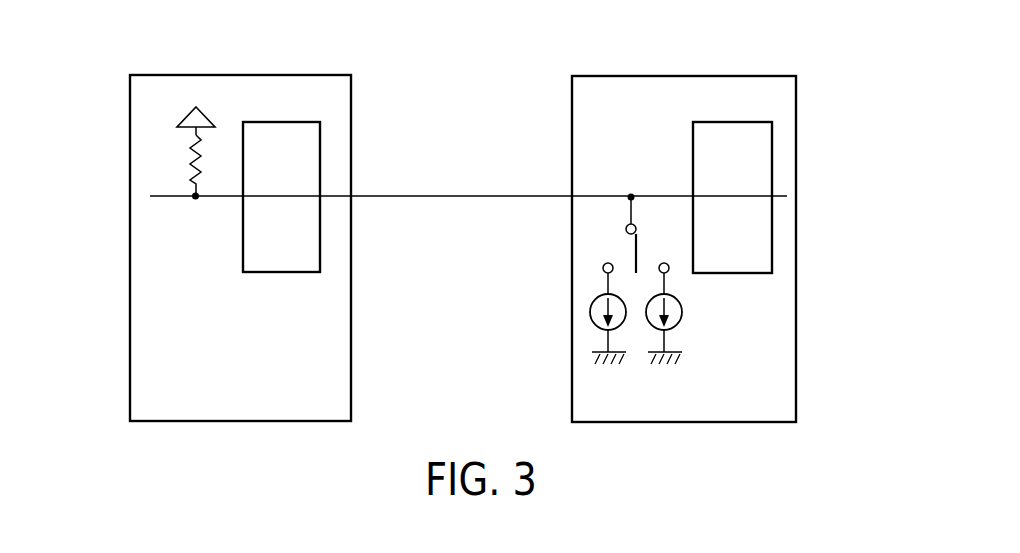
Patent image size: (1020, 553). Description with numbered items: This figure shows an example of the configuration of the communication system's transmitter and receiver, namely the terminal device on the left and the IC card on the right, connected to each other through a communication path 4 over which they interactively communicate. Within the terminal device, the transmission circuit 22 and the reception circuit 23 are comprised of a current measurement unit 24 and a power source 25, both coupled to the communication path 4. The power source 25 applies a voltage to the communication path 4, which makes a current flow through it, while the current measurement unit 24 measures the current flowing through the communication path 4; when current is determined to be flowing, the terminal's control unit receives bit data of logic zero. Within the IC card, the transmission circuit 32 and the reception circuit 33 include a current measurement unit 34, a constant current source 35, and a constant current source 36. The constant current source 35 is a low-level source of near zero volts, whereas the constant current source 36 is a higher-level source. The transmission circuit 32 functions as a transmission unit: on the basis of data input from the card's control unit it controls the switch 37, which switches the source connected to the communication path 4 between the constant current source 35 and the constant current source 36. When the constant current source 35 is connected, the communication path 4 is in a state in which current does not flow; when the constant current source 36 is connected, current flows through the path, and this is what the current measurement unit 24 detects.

The communication path 4 is at (424, 198).
The transmission circuit 22 is at (194, 248).
The reception circuit 23 is at (130, 255).
The current measurement unit 24 is at (279, 122).
The power source 25 is at (186, 113).
The transmission circuit 32 is at (730, 249).
The reception circuit 33 is at (797, 236).
The current measurement unit 34 is at (718, 122).
The constant current source 35 is at (590, 312).
The constant current source 36 is at (682, 312).
The switch 37 is at (626, 229).